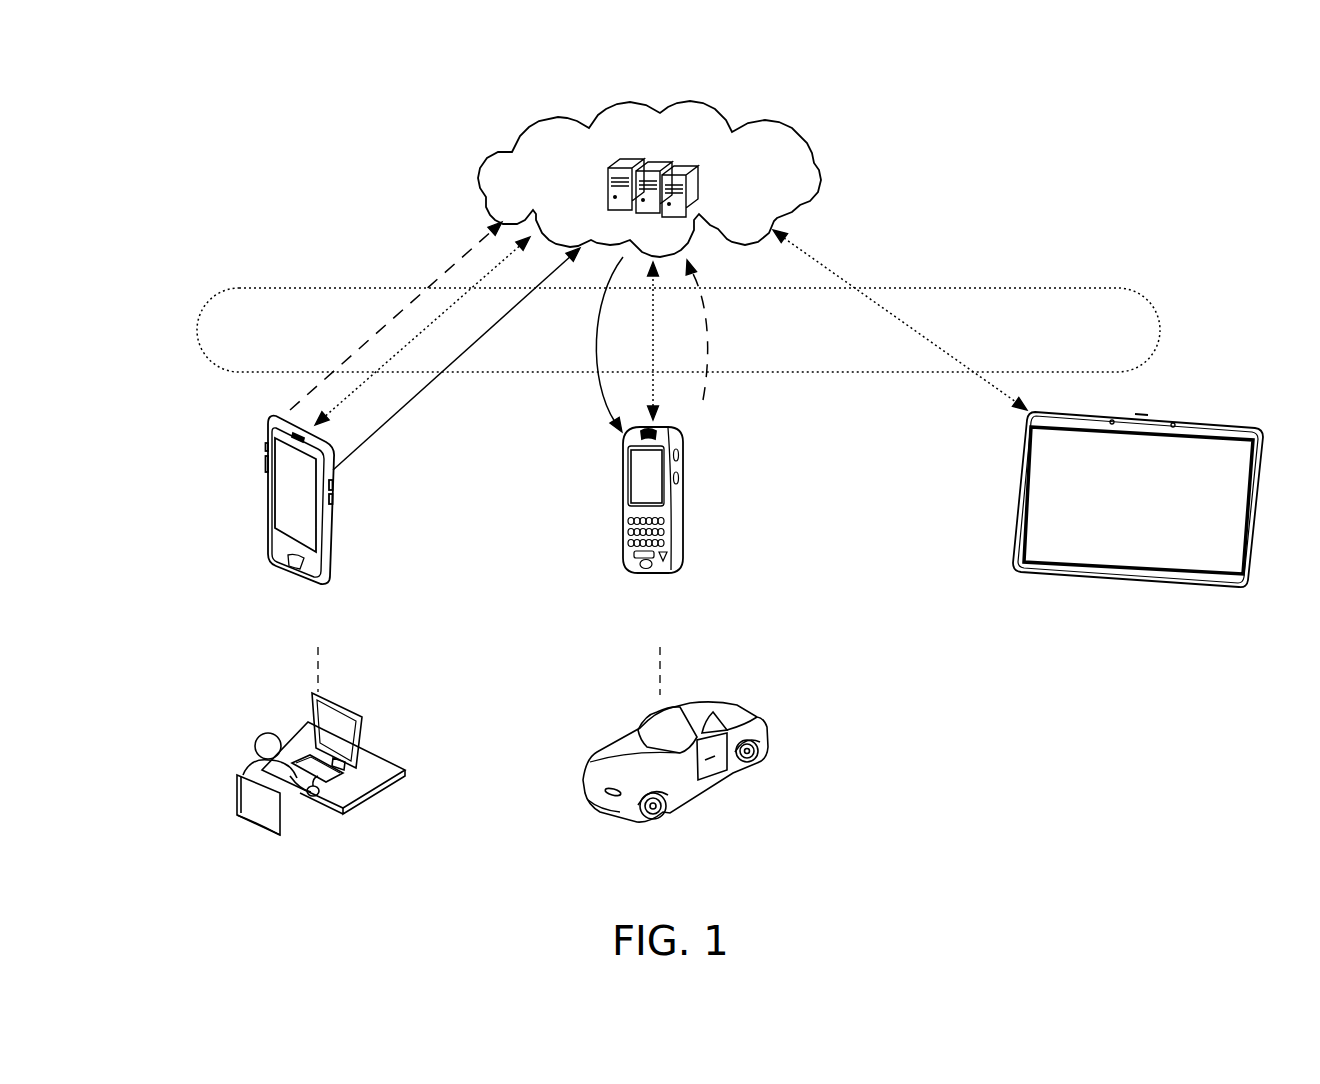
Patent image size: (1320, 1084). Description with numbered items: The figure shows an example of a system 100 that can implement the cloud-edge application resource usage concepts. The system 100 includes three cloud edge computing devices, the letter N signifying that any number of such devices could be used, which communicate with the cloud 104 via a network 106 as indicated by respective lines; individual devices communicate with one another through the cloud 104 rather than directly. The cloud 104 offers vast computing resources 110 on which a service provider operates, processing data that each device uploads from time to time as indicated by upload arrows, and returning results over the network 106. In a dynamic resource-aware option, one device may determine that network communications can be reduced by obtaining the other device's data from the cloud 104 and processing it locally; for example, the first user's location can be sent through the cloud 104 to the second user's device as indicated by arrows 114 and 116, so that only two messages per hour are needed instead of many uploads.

The system 100 is at (260, 93).
The cloud 104 is at (668, 101).
The computing resources 110 is at (798, 158).
The network 106 is at (1105, 280).
The arrow 114 is at (503, 345).
The arrow 116 is at (615, 406).